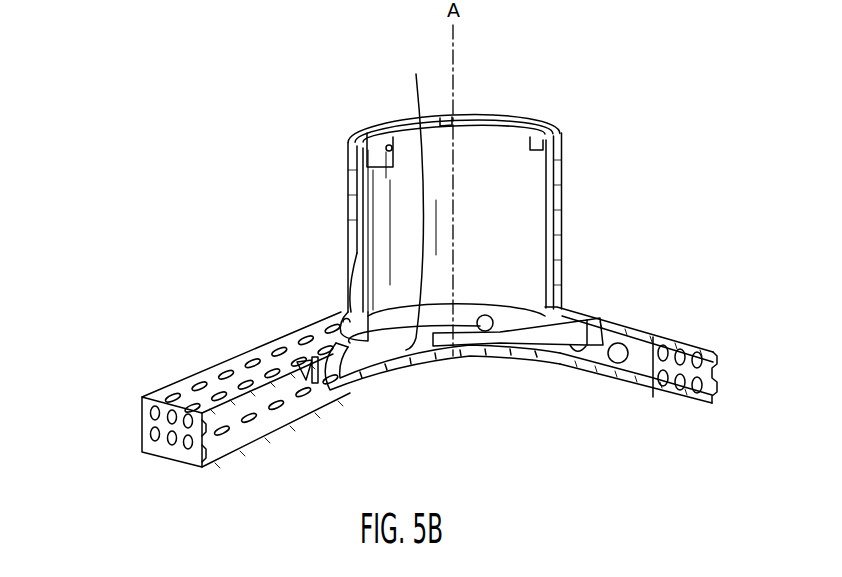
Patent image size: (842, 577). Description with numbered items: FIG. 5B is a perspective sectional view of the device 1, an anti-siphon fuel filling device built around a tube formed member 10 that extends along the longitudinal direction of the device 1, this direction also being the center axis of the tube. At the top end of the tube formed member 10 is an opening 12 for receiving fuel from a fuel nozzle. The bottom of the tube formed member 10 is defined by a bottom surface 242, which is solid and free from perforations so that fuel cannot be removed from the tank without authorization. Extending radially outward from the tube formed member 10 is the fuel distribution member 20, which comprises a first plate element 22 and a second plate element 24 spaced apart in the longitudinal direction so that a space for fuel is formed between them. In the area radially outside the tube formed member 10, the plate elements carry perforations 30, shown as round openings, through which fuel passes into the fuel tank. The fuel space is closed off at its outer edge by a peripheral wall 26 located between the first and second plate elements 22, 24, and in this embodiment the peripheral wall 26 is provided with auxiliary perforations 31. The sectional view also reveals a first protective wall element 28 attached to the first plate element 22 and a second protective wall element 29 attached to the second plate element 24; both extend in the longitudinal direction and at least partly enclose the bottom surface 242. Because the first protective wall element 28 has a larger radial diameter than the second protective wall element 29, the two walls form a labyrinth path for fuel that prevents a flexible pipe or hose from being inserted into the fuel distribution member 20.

The device 1 is at (667, 130).
The tube formed member 10 is at (356, 187).
The opening 12 is at (379, 104).
The bottom surface 242 is at (416, 199).
The fuel distribution member 20 is at (116, 382).
The first plate element 22 is at (656, 340).
The second plate element 24 is at (658, 392).
The peripheral wall 26 is at (188, 451).
The first protective wall element 28 is at (578, 332).
The second protective wall element 29 is at (349, 378).
The perforations 30 is at (247, 362).
The auxiliary perforations 31 is at (156, 437).